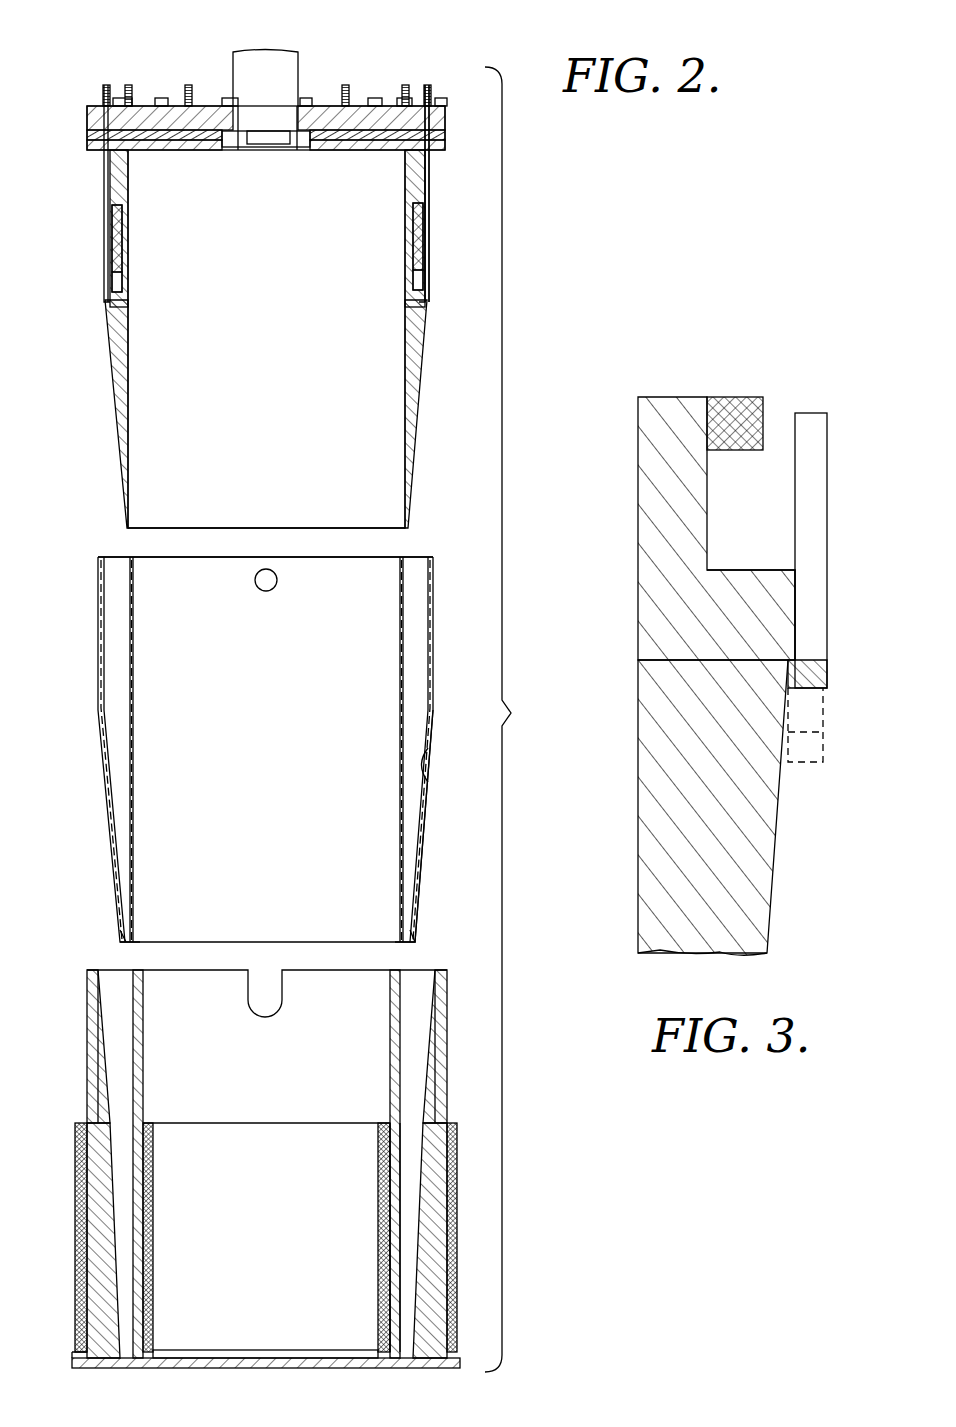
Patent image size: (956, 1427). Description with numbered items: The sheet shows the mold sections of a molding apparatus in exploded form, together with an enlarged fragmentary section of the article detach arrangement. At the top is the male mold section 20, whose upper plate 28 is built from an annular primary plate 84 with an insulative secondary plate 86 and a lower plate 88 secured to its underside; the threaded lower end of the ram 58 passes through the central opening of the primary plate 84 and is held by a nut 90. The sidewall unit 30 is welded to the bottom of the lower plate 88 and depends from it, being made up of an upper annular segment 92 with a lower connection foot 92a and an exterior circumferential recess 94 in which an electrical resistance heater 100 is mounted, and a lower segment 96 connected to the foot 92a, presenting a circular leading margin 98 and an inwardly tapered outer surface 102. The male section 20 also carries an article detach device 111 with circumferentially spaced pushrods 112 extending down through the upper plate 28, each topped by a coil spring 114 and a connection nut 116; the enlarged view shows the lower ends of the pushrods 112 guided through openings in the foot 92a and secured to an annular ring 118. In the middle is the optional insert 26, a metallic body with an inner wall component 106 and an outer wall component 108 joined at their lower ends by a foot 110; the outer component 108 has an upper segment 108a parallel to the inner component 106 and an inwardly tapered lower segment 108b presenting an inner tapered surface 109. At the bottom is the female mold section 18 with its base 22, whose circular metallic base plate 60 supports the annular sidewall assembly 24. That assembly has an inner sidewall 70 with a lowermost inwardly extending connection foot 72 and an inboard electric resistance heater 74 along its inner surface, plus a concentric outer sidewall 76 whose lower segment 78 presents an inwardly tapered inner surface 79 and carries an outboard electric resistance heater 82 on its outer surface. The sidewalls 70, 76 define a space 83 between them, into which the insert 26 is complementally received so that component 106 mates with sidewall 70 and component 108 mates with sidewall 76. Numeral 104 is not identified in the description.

In FIG. 2, the female mold section 18 is at (62, 1180).
In FIG. 2, the male mold section 20 is at (78, 394).
In FIG. 2, the base 22 is at (58, 1350).
In FIG. 2, the annular sidewall assembly 24 is at (470, 1038).
In FIG. 2, the insert 26 is at (80, 748).
In FIG. 2, the upper plate 28 is at (78, 106).
In FIG. 2, the sidewall unit 30 is at (438, 384).
In FIG. 2, the ram 58 is at (268, 58).
In FIG. 2, the base plate 60 is at (222, 1362).
In FIG. 2, the inner sidewall 70 is at (390, 1032).
In FIG. 2, the connection foot 72 is at (376, 1356).
In FIG. 2, the inboard electric resistance heater 74 is at (153, 1210).
In FIG. 2, the outer sidewall 76 is at (440, 1080).
In FIG. 2, the lower segment 78 is at (440, 1284).
In FIG. 2, the inner surface 79 is at (430, 1226).
In FIG. 2, the outboard electric resistance heater 82 is at (457, 1184).
In FIG. 2, the space 83 is at (415, 1015).
In FIG. 2, the primary plate 84 is at (440, 114).
In FIG. 2, the secondary plate 86 is at (87, 135).
In FIG. 2, the lower plate 88 is at (442, 148).
In FIG. 2, the nut 90 is at (266, 147).
In FIG. 2, the upper annular segment 92 is at (410, 262).
In FIG. 3, the upper annular segment 92 is at (652, 516).
In FIG. 3, the connection foot 92a is at (738, 595).
In FIG. 2, the recess 94 is at (423, 283).
In FIG. 2, the lower segment 96 is at (415, 366).
In FIG. 3, the lower segment 96 is at (755, 850).
In FIG. 2, the leading margin 98 is at (395, 528).
In FIG. 2, the electrical resistance heater 100 is at (122, 248).
In FIG. 3, the electrical resistance heater 100 is at (730, 408).
In FIG. 3, the outer surface 102 is at (768, 925).
In FIG. 2, the lower end of intermediate section 104 is at (104, 912).
In FIG. 2, the inner wall component 106 is at (133, 736).
In FIG. 2, the outer wall component 108 is at (432, 656).
In FIG. 2, the upper segment 108a is at (433, 580).
In FIG. 2, the lower segment 108b is at (425, 846).
In FIG. 2, the inner tapered surface 109 is at (428, 758).
In FIG. 2, the foot 110 is at (405, 942).
In FIG. 2, the article detach device 111 is at (445, 238).
In FIG. 3, the article detach device 111 is at (825, 392).
In FIG. 2, the pushrods 112 is at (104, 268).
In FIG. 3, the pushrods 112 is at (812, 475).
In FIG. 2, the coil spring 114 is at (432, 92).
In FIG. 2, the connection nut 116 is at (405, 85).
In FIG. 3, the annular ring 118 is at (818, 672).